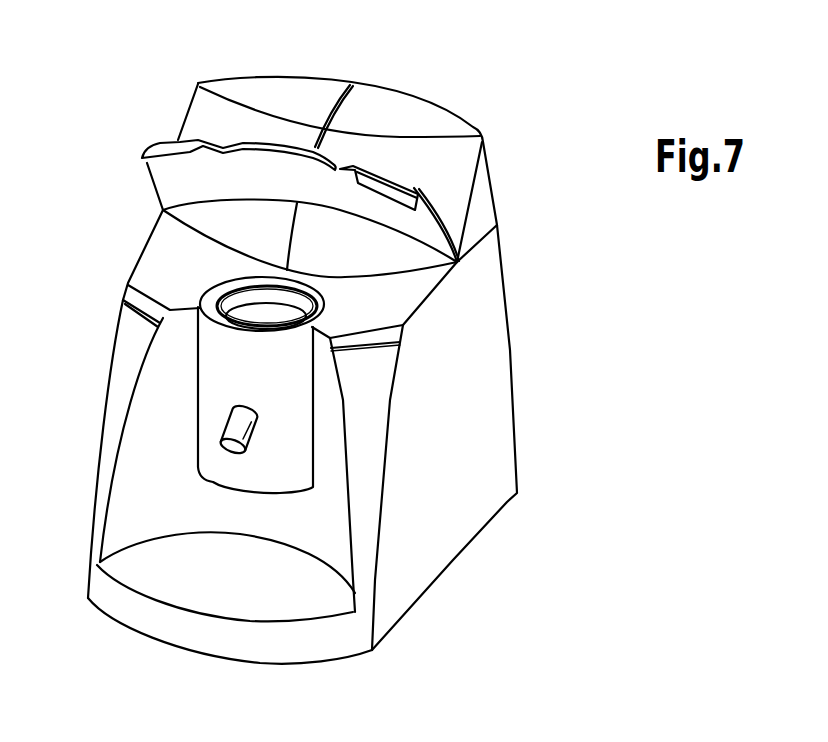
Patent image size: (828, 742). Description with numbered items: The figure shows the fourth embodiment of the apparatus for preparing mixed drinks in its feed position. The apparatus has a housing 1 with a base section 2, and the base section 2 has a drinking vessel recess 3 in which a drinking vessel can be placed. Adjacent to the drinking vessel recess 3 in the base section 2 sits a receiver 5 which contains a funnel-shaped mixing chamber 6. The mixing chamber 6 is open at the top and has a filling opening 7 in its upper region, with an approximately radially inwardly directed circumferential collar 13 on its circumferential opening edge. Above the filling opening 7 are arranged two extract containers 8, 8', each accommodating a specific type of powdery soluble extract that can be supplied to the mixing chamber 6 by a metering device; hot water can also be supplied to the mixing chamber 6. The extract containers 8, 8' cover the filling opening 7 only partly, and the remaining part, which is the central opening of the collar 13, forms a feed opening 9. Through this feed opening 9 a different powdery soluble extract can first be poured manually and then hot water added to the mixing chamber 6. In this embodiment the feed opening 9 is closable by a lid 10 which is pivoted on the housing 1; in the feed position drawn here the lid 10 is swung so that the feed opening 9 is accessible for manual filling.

The housing 1 is at (530, 317).
The base section 2 is at (487, 427).
The drinking vessel recess 3 is at (340, 462).
The receiver 5 is at (223, 470).
The mixing chamber 6 is at (247, 320).
The filling opening 7 is at (223, 290).
The feed opening 9 is at (267, 306).
The extract container 8 is at (297, 157).
The extract container 8' is at (450, 180).
The lid 10 is at (410, 197).
The circumferential collar 13 is at (233, 423).